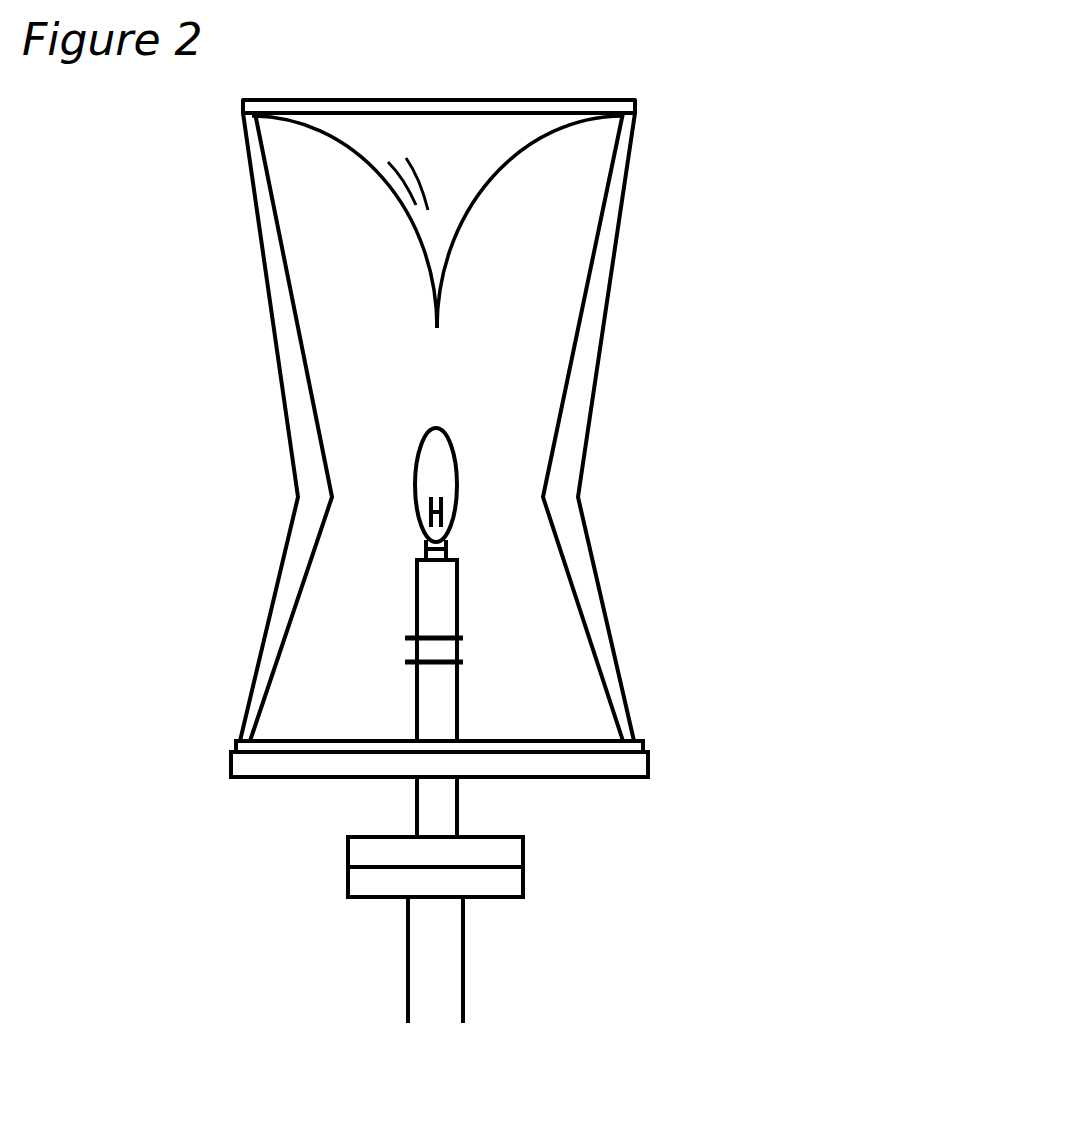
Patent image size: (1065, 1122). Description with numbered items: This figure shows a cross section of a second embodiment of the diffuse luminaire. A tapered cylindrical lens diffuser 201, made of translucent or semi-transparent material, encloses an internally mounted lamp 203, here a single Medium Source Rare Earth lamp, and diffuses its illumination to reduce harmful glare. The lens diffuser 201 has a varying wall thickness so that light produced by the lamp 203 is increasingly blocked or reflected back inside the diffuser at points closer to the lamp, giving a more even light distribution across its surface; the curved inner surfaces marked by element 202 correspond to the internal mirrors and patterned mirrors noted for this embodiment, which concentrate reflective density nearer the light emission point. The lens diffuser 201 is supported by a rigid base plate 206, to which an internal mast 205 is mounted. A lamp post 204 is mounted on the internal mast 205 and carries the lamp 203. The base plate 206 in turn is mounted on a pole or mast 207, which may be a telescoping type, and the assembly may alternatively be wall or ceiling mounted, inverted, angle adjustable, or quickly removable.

The lens diffuser 201 is at (650, 127).
The inner reflector surface 202 is at (478, 259).
The lamp 203 is at (478, 475).
The lamp post 204 is at (453, 598).
The internal mast 205 is at (460, 687).
The base plate 206 is at (459, 815).
The pole or mast 207 is at (459, 958).